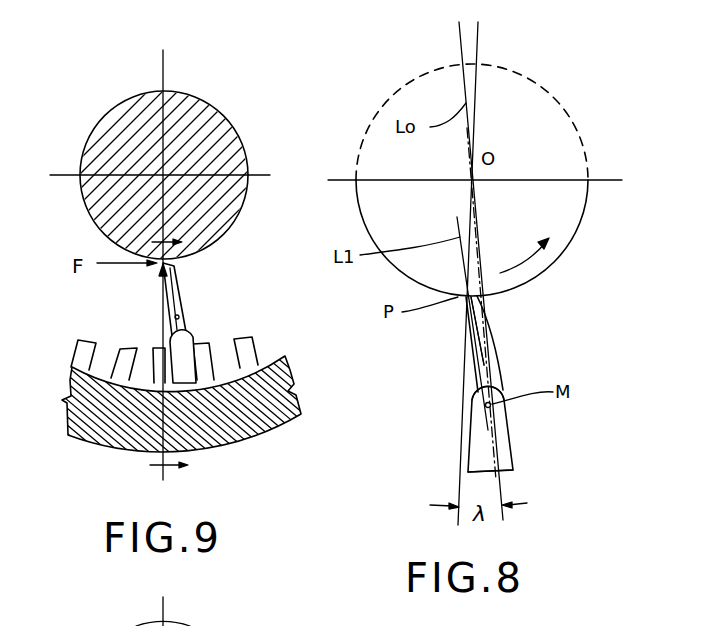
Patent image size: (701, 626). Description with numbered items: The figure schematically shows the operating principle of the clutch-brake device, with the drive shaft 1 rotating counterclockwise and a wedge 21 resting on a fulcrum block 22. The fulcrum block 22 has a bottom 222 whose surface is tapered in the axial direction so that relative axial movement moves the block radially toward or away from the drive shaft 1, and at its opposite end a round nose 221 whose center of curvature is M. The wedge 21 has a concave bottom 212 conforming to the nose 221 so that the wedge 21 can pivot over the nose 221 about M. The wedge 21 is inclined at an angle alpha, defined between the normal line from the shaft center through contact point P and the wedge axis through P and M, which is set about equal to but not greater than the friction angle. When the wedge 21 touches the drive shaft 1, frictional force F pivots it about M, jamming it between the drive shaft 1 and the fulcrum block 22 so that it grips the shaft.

In FIG. 9, the drive shaft 1 is at (91, 134).
In FIG. 9, the wedge 21 is at (185, 293).
In FIG. 8, the wedge 21 is at (488, 332).
In FIG. 9, the fulcrum block 22 is at (212, 448).
In FIG. 8, the fulcrum block 22 is at (512, 440).
In FIG. 8, the concave bottom 212 is at (492, 362).
In FIG. 8, the nose 221 is at (494, 384).
In FIG. 8, the bottom 222 is at (508, 474).